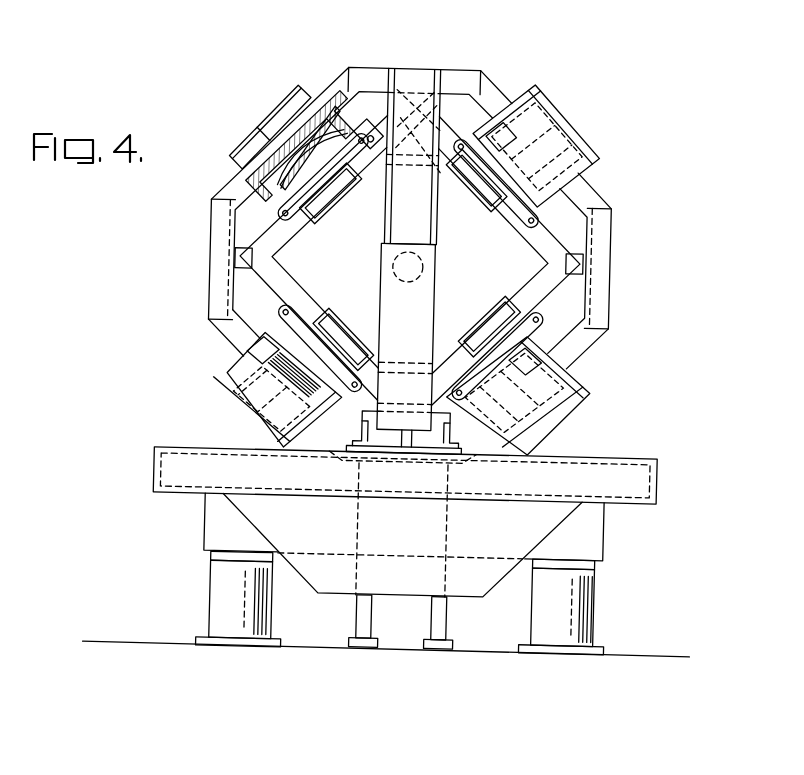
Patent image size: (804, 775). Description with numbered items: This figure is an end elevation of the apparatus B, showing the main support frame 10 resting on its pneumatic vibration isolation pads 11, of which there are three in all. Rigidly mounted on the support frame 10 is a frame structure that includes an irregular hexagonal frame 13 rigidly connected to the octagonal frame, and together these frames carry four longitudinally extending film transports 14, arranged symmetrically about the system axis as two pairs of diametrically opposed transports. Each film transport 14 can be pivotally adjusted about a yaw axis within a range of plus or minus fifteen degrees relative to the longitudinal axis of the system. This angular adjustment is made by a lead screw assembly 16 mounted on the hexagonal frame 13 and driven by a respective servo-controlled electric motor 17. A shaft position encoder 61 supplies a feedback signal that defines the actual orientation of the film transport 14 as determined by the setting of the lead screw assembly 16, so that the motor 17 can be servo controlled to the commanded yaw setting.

The main support frame 10 is at (172, 447).
The pneumatic vibration isolation pads 11 is at (220, 584).
The irregular hexagonal frame 13 is at (292, 283).
The film transport 14 is at (240, 133).
The lead screw assembly 16 is at (258, 246).
The electric motor 17 is at (377, 92).
The shaft position encoder 61 is at (405, 93).
The machine assembly B is at (238, 92).